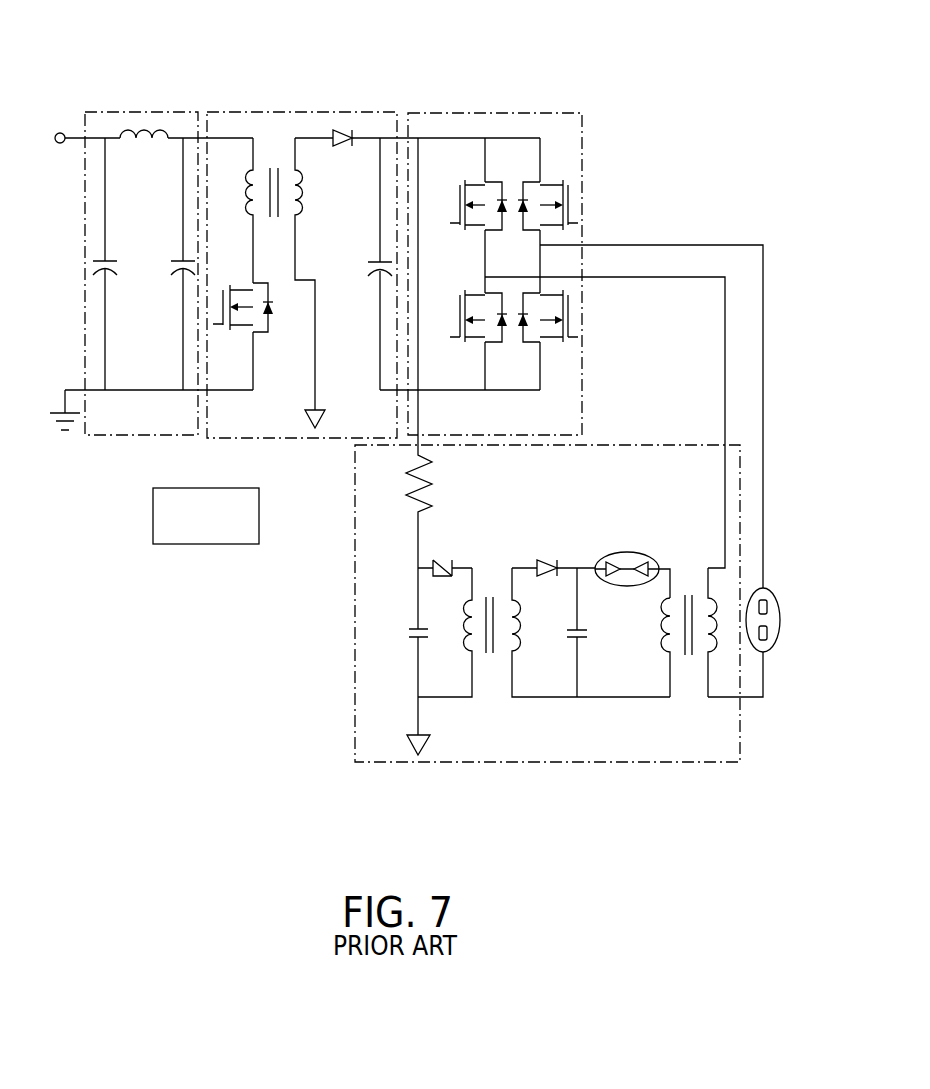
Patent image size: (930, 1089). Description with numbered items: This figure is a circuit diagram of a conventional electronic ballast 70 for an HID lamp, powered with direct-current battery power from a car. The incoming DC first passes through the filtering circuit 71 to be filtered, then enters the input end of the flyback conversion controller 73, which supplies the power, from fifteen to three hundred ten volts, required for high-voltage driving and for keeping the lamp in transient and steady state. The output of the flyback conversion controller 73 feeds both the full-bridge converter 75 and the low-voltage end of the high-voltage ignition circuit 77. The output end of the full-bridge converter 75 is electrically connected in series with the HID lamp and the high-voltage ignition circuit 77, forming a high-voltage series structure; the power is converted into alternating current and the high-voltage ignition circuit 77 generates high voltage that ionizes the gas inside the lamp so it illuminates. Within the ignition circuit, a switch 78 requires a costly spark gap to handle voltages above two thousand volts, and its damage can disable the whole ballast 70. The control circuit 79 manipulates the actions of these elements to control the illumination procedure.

The electronic ballast 70 is at (190, 596).
The filtering circuit 71 is at (158, 112).
The flyback conversion controller 73 is at (308, 112).
The full-bridge converter 75 is at (492, 112).
The high-voltage ignition circuit 77 is at (355, 603).
The switch 78 is at (627, 552).
The control circuit 79 is at (153, 517).